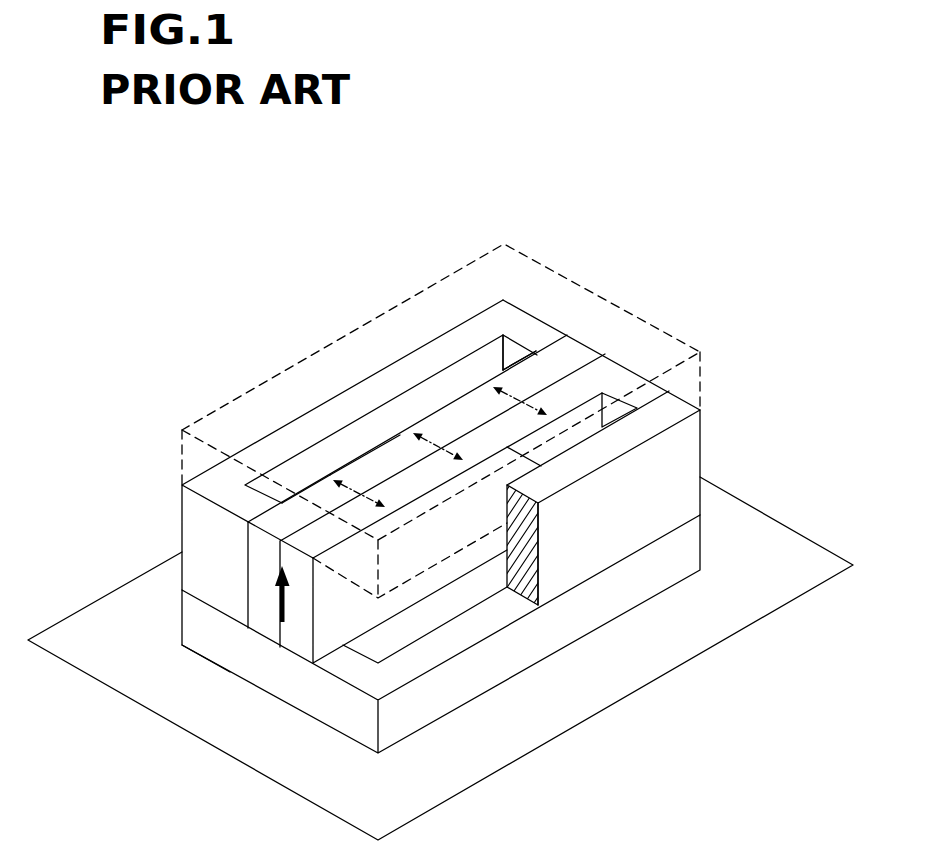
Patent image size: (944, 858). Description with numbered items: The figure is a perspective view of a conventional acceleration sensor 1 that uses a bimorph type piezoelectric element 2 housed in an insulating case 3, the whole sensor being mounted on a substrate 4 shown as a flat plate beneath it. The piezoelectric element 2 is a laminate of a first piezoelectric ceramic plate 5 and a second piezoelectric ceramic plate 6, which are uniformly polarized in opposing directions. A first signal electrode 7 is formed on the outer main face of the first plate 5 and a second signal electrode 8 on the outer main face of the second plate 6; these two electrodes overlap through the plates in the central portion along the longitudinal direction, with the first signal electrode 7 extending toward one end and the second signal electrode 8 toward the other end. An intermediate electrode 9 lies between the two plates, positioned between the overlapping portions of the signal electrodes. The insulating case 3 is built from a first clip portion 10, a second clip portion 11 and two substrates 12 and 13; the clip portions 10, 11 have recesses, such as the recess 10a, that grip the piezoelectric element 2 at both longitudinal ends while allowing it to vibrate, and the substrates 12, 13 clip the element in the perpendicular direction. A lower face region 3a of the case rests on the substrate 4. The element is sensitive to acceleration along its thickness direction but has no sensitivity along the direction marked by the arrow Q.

The acceleration sensor 1 is at (196, 228).
The bimorph type piezoelectric element 2 is at (466, 382).
The insulating case 3 is at (60, 430).
The bottom surface of element 3a is at (217, 665).
The substrate 4 is at (110, 674).
The first piezoelectric ceramic plate 5 is at (387, 475).
The second piezoelectric ceramic plate 6 is at (393, 420).
The first signal electrode 7 is at (325, 632).
The second signal electrode 8 is at (512, 362).
The intermediate electrode 9 is at (537, 388).
The first clip portion 10 is at (192, 510).
The recess 10a is at (403, 478).
The second clip portion 11 is at (507, 552).
The substrate 12 is at (193, 623).
The substrate 13 is at (180, 458).
The arrow Q is at (287, 622).